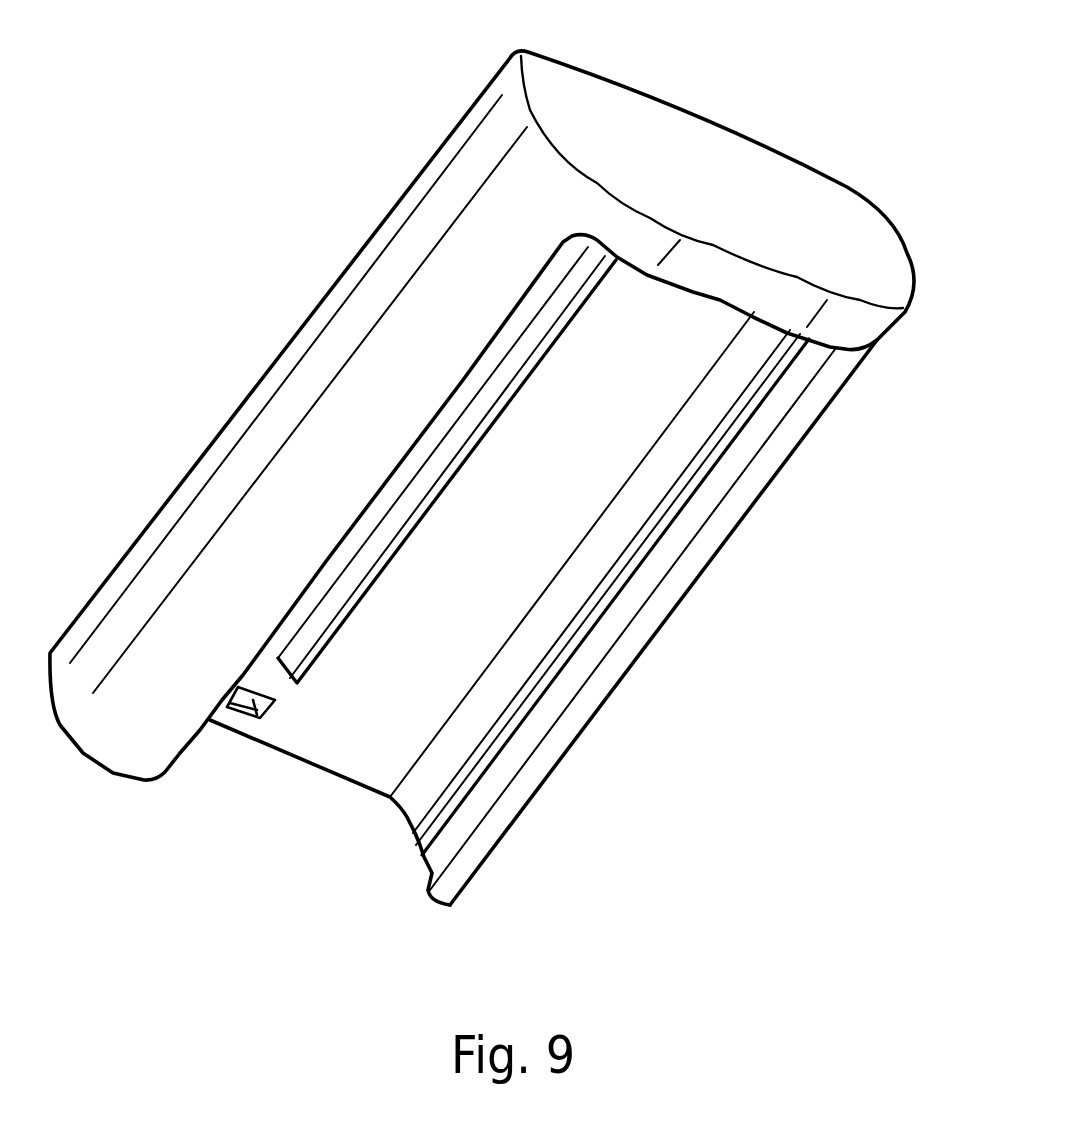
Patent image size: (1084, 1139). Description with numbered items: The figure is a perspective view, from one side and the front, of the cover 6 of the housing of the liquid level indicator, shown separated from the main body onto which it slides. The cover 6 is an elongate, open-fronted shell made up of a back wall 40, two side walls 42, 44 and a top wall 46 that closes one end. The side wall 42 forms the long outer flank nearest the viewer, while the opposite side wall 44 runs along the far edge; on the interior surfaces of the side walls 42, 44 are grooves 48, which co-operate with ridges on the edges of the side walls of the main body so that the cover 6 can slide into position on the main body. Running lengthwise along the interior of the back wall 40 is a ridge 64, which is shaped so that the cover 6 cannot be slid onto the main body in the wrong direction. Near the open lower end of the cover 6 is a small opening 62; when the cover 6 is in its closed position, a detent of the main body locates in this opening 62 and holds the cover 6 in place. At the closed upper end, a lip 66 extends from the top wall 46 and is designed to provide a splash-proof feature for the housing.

The cover 6 is at (487, 143).
The back wall 40 is at (343, 750).
The side wall 42 is at (310, 468).
The side wall 44 is at (670, 592).
The top wall 46 is at (653, 113).
The grooves 48 is at (443, 818).
The opening 62 is at (255, 712).
The ridge 64 is at (493, 420).
The lip 66 is at (794, 298).